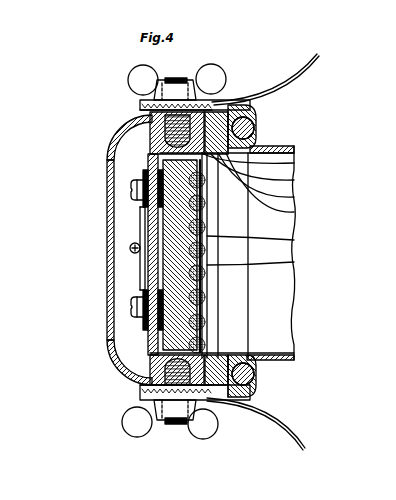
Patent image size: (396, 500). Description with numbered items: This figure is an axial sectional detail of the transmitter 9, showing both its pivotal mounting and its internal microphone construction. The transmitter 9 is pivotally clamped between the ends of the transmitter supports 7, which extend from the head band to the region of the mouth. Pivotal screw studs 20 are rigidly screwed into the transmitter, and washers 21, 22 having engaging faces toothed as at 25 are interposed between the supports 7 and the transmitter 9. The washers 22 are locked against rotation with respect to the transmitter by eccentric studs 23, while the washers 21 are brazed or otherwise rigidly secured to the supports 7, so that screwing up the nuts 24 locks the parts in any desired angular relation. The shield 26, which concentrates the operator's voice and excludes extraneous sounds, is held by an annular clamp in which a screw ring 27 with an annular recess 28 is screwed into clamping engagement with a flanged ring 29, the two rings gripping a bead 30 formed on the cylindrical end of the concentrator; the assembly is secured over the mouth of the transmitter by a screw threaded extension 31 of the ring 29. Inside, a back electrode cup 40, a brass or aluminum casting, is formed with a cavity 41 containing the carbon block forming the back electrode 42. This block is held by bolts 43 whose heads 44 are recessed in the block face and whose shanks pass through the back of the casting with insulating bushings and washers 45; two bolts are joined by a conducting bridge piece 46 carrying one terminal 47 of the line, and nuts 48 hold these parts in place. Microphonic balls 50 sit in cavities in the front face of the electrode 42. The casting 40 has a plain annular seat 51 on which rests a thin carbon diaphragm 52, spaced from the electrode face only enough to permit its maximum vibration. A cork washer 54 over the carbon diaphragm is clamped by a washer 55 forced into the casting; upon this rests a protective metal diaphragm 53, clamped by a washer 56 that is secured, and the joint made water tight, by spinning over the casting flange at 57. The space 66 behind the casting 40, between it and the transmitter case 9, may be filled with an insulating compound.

The transmitter support 7 is at (312, 62).
The transmitter 9 is at (108, 177).
The pivotal screw stud 20 is at (172, 78).
The washer 21 is at (140, 102).
The washer 22 is at (140, 111).
The eccentric stud 23 is at (212, 115).
The nut 24 is at (133, 80).
The toothed face 25 is at (140, 107).
The shield 26 is at (278, 278).
The screw ring 27 is at (286, 170).
The annular recess 28 is at (262, 152).
The flanged ring 29 is at (252, 128).
The bead 30 is at (250, 358).
The screw threaded extension 31 is at (232, 112).
The back electrode cup 40 is at (152, 366).
The cavity 41 is at (145, 350).
The back electrode 42 is at (160, 340).
The bolt 43 is at (131, 190).
The bolt head 44 is at (152, 268).
The insulating bushing and washer 45 is at (143, 219).
The conducting bridge piece 46 is at (137, 235).
The terminal 47 is at (148, 253).
The nut 48 is at (143, 201).
The microphonic ball 50 is at (150, 163).
The annular seat 51 is at (150, 142).
The carbon diaphragm 52 is at (294, 262).
The diaphragm 53 is at (294, 240).
The cork washer 54 is at (294, 213).
The washer 55 is at (294, 198).
The washer 56 is at (294, 182).
The spun-over flange 57 is at (252, 118).
The space 66 is at (122, 231).